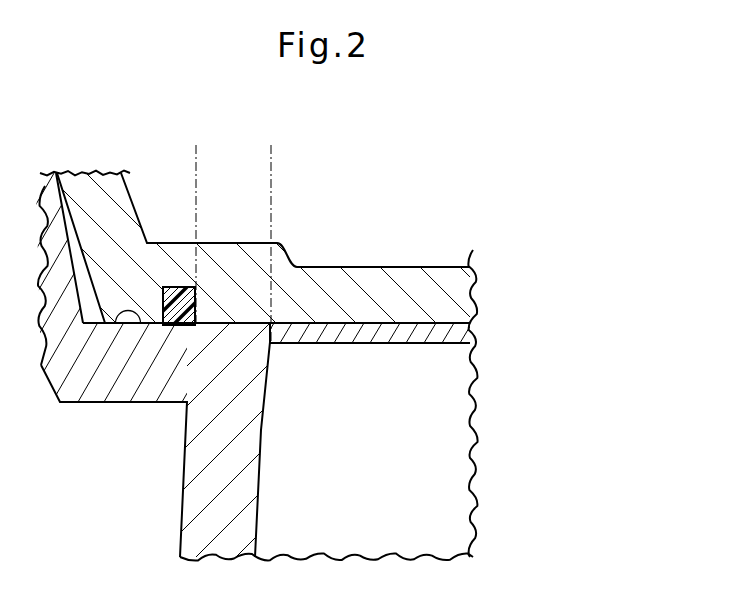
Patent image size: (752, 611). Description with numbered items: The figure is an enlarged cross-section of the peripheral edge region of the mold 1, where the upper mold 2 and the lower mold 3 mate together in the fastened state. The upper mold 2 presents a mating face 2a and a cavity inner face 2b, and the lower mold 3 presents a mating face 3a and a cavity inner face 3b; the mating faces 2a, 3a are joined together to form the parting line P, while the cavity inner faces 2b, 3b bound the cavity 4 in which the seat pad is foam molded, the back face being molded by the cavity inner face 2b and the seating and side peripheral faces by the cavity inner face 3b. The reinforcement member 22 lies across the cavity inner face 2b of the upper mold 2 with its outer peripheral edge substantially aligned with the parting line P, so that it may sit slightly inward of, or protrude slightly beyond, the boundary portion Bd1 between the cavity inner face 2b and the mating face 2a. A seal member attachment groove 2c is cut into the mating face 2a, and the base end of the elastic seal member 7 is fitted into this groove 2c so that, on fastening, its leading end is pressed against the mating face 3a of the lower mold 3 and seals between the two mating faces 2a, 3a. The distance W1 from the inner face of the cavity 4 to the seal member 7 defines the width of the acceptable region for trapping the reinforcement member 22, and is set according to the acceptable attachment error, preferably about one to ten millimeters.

The mold 1 is at (528, 238).
The upper mold 2 is at (397, 266).
The mating face 2a is at (214, 323).
The cavity inner face 2b is at (474, 336).
The seal member attachment groove 2c is at (176, 287).
The lower mold 3 is at (181, 483).
The mating face 3a is at (126, 314).
The cavity inner face 3b is at (259, 477).
The cavity 4 is at (423, 472).
The seal member 7 is at (178, 327).
The reinforcement member 22 is at (372, 343).
The parting line P is at (256, 336).
The distance W1 is at (261, 158).
The boundary portion Bd1 is at (272, 180).